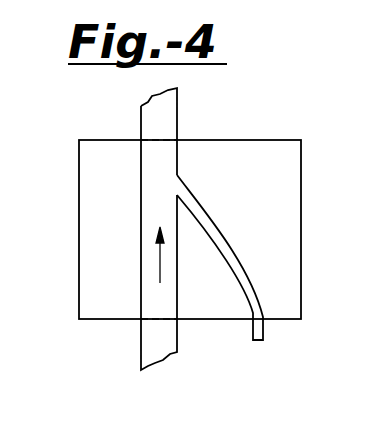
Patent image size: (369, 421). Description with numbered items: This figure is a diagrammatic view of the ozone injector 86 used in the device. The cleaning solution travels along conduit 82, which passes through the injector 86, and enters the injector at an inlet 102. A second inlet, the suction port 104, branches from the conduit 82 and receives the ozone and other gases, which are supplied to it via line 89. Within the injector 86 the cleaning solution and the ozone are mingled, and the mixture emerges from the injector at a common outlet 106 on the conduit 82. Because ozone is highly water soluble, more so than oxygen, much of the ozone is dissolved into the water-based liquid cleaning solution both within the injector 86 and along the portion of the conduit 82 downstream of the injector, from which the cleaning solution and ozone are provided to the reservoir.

The conduit 82 is at (177, 117).
The ozone injector 86 is at (90, 207).
The common outlet 106 is at (154, 137).
The inlet 102 is at (160, 321).
The suction port 104 is at (250, 322).
The line 89 is at (265, 323).